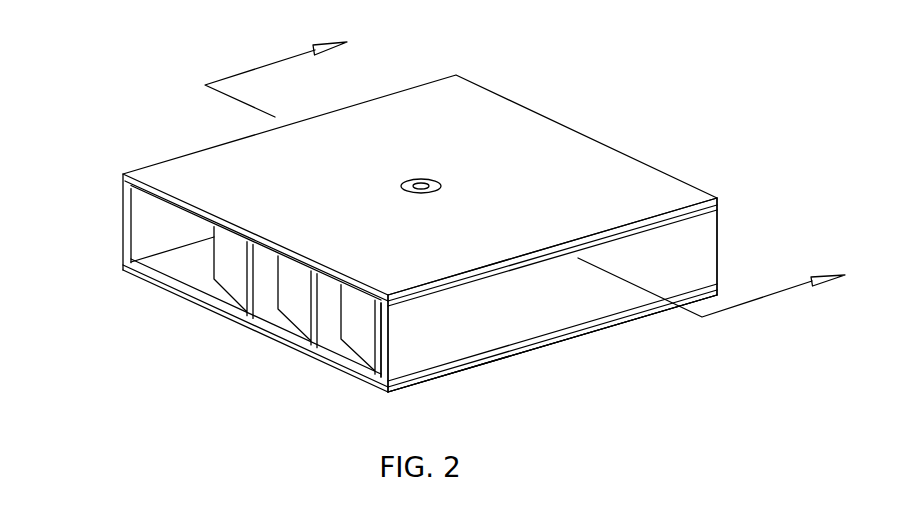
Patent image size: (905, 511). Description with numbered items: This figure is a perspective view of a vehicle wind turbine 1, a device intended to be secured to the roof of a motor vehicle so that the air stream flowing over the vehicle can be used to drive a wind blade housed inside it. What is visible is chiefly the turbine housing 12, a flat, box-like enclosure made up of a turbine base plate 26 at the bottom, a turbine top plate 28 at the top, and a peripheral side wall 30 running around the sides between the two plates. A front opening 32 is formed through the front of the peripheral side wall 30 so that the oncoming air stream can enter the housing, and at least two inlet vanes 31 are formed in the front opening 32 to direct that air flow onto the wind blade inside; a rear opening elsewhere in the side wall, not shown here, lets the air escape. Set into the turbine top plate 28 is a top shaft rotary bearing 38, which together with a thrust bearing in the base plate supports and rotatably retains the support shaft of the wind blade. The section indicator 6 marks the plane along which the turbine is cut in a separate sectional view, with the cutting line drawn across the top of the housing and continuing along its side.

The vehicle wind turbine 1 is at (722, 170).
The section line 6- 6 is at (535, 171).
The turbine housing 12 is at (622, 332).
The turbine base plate 26 is at (473, 368).
The turbine top plate 28 is at (630, 165).
The peripheral side wall 30 is at (703, 250).
The inlet vanes 31 is at (363, 343).
The front opening 32 is at (170, 268).
The top shaft rotary bearing 38 is at (436, 177).